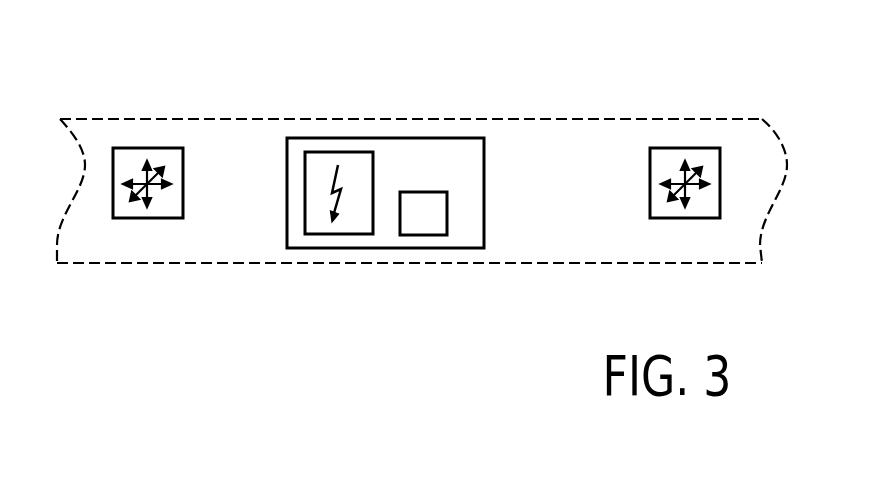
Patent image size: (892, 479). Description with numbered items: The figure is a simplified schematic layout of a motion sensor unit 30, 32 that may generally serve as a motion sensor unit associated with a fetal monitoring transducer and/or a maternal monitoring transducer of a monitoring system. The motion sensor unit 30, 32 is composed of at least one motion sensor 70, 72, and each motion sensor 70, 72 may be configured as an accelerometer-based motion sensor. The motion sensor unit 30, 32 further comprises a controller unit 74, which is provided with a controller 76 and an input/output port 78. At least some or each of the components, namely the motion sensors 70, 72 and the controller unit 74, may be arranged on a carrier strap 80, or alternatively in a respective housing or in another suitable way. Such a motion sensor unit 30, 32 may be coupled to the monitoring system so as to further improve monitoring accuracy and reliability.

The motion sensor unit 30 is at (422, 255).
The motion sensor unit 32 is at (284, 276).
The motion sensor 70 is at (145, 148).
The motion sensor 72 is at (682, 148).
The controller unit 74 is at (454, 126).
The controller 76 is at (345, 234).
The input/output port 78 is at (427, 235).
The carrier strap 80 is at (252, 137).